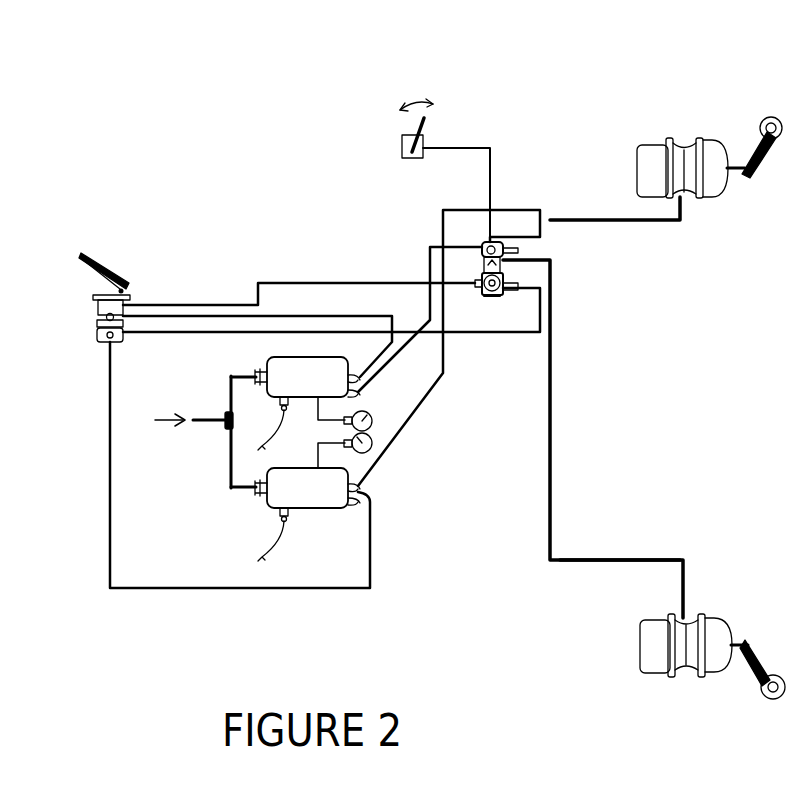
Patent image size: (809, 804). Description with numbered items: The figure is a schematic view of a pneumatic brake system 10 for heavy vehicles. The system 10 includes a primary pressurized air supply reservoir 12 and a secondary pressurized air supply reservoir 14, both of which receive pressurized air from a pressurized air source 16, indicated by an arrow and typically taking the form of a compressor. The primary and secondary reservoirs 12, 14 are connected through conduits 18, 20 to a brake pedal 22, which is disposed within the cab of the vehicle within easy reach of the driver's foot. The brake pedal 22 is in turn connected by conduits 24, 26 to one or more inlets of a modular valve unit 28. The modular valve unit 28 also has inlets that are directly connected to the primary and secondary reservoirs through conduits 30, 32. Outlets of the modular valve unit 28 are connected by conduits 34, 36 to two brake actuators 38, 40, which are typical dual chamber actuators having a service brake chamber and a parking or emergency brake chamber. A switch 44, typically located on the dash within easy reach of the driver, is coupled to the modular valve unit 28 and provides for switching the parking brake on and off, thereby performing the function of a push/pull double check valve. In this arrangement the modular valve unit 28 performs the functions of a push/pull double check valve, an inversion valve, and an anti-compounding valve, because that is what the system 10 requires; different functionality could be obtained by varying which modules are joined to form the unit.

The pneumatic brake system 10 is at (92, 140).
The primary pressurized air supply reservoir 12 is at (278, 362).
The secondary pressurized air supply reservoir 14 is at (333, 500).
The pressurized air source 16 is at (172, 432).
The conduit 18 is at (293, 318).
The conduit 20 is at (325, 590).
The brake pedal 22 is at (117, 277).
The conduit 24 is at (272, 278).
The conduit 26 is at (493, 333).
The modular valve unit 28 is at (493, 300).
The conduit 30 is at (407, 348).
The conduit 32 is at (410, 420).
The conduit 34 is at (637, 222).
The conduit 36 is at (600, 558).
The brake actuator 38 is at (683, 150).
The brake actuator 40 is at (680, 675).
The switch 44 is at (407, 163).